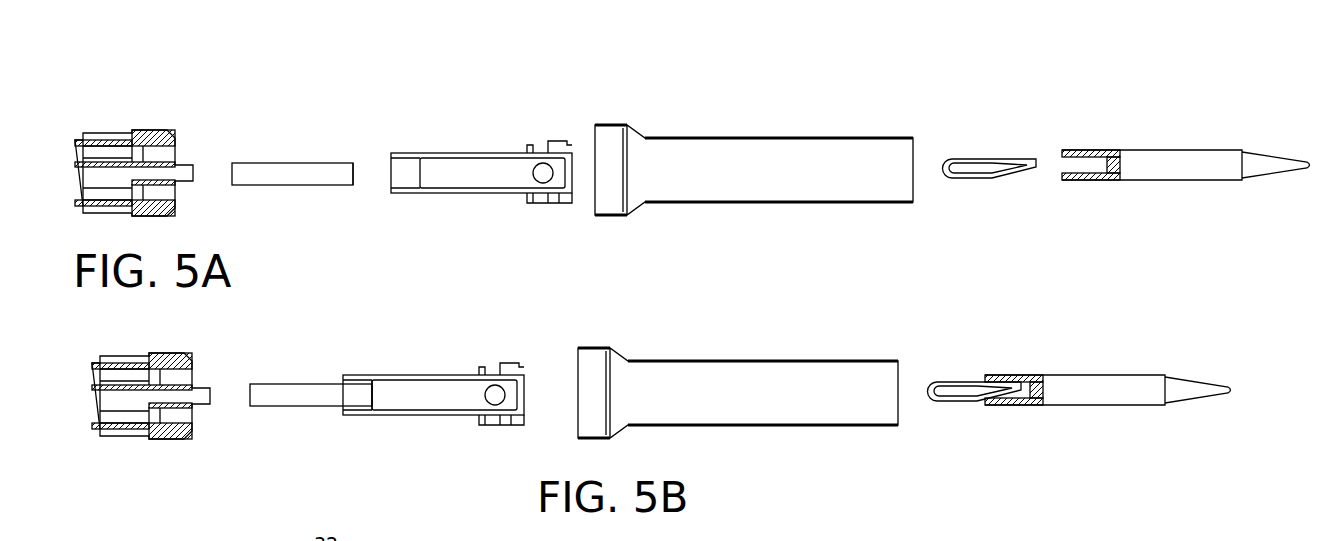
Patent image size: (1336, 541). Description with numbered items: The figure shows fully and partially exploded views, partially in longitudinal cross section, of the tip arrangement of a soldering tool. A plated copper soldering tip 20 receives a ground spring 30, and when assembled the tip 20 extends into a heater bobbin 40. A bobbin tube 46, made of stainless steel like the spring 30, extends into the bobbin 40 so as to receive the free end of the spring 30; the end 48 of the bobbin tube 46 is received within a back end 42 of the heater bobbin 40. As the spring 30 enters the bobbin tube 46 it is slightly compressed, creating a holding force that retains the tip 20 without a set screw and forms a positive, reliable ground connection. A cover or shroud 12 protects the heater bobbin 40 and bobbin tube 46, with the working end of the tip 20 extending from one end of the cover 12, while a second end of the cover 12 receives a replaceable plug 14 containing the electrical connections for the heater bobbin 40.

In FIG. 5A, the cover 12 is at (780, 138).
In FIG. 5B, the cover 12 is at (785, 428).
In FIG. 5A, the plug 14 is at (148, 130).
In FIG. 5B, the plug 14 is at (128, 430).
In FIG. 5A, the plated copper soldering tip 20 is at (1172, 165).
In FIG. 5B, the plated copper soldering tip 20 is at (1122, 392).
In FIG. 5A, the ground spring 30 is at (973, 160).
In FIG. 5B, the ground spring 30 is at (943, 383).
In FIG. 5A, the heater bobbin 40 is at (465, 153).
In FIG. 5B, the heater bobbin 40 is at (418, 415).
In FIG. 5A, the back end 42 is at (386, 150).
In FIG. 5B, the back end 42 is at (342, 385).
In FIG. 5A, the bobbin tube 46 is at (275, 172).
In FIG. 5B, the bobbin tube 46 is at (297, 404).
In FIG. 5A, the end 48 is at (355, 185).
In FIG. 5B, the end 48 is at (368, 378).